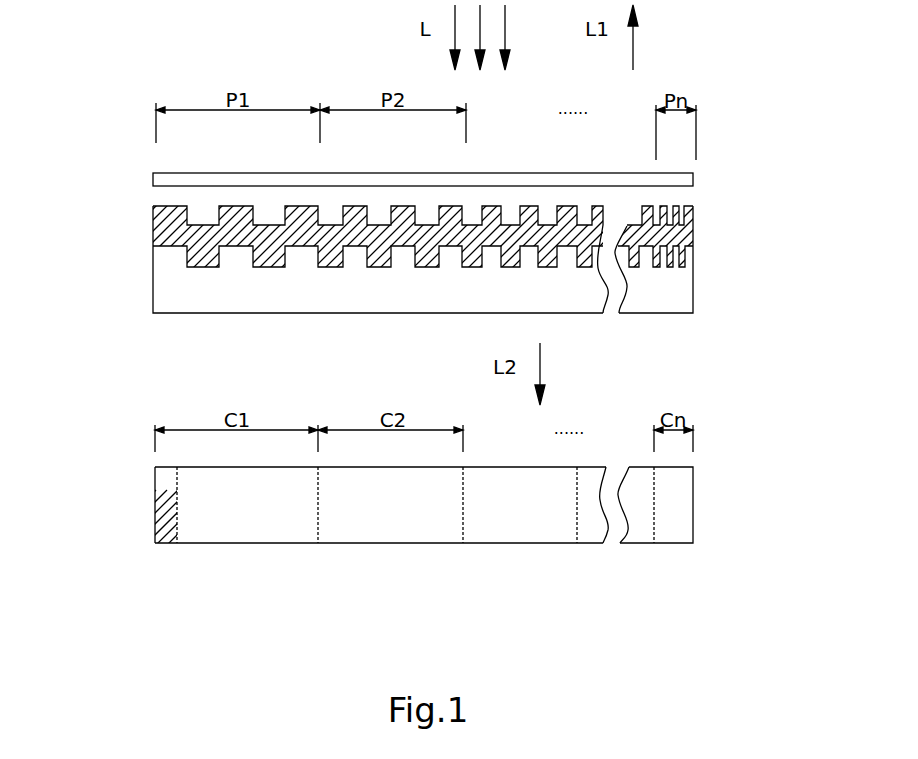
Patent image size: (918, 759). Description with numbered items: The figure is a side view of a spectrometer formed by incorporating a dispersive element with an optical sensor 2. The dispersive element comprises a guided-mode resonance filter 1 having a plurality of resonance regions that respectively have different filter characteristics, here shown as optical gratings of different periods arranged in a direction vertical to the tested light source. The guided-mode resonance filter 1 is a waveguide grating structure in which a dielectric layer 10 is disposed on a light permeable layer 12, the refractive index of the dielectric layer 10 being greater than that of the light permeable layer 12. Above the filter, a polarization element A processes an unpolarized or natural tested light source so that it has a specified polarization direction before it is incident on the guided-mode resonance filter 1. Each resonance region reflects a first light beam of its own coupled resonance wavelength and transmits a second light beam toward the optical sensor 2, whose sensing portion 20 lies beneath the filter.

The guided-mode resonance filter 1 is at (153, 205).
The polarization element A is at (693, 185).
The dielectric layer 10 is at (177, 242).
The light permeable layer 12 is at (173, 303).
The optical sensor 2 is at (693, 467).
The sensing unit 20 is at (155, 467).